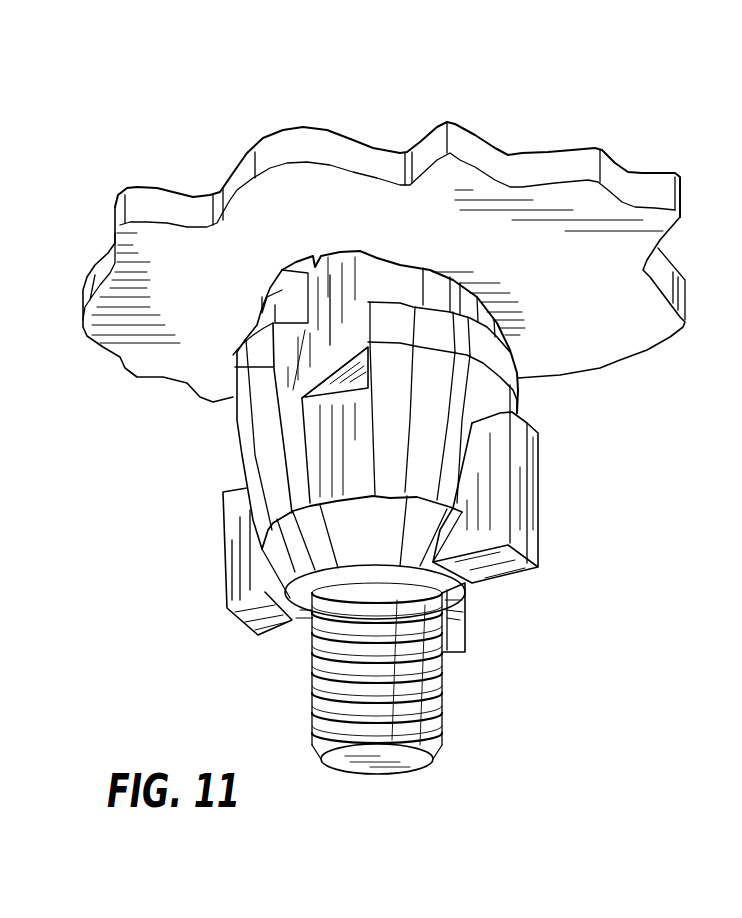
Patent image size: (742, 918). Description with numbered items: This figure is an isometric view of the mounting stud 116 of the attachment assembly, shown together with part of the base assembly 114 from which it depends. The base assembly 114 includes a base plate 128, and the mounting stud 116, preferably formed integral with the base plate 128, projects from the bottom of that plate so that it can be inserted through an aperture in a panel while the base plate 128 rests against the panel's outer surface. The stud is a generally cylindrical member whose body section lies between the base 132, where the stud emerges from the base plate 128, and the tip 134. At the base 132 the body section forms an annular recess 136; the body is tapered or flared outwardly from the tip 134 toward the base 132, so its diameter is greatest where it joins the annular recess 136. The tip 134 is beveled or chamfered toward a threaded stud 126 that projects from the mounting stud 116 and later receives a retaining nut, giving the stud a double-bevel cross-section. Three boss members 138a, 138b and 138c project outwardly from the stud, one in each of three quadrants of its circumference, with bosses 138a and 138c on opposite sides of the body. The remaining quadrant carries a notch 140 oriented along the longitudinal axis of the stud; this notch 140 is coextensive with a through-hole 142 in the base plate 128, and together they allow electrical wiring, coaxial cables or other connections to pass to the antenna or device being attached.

The base assembly 114 is at (368, 160).
The base plate 128 is at (623, 337).
The base of the stud 132 is at (433, 270).
The through-hole 142 is at (313, 267).
The annular recess 136 is at (293, 307).
The notch 140 is at (319, 352).
The mounting stud 116 is at (194, 466).
The boss member 138a is at (240, 583).
The boss member 138b is at (447, 650).
The boss member 138c is at (527, 518).
The tip of the stud 134 is at (458, 590).
The threaded stud 126 is at (400, 770).